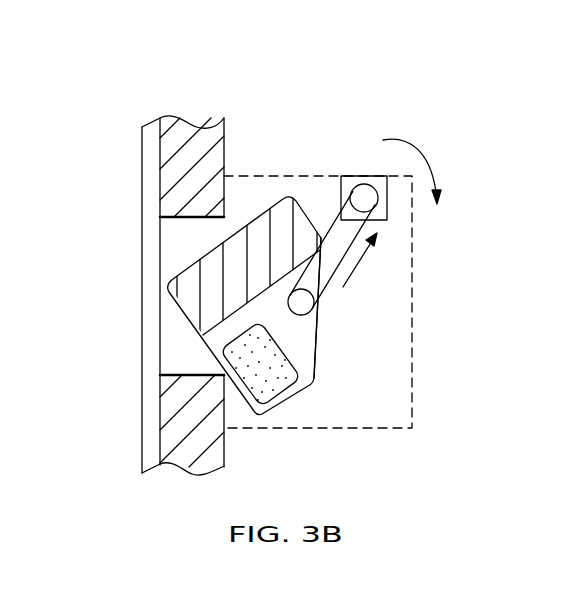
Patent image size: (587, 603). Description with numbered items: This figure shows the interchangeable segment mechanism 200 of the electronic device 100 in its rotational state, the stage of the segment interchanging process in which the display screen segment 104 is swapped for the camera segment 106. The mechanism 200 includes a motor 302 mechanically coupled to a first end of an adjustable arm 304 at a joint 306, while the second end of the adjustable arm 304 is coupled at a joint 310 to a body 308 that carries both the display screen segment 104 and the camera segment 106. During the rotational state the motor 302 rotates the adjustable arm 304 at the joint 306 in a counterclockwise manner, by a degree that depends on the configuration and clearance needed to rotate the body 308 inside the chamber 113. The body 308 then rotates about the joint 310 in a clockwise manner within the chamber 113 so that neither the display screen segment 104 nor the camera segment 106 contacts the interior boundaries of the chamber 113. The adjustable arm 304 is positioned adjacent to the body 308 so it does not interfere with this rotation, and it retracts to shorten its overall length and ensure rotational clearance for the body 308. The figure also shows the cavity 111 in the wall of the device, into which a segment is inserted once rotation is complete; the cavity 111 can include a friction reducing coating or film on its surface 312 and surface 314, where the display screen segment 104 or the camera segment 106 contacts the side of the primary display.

The electronic device 100 is at (110, 102).
The display screen segment 104 is at (282, 215).
The camera segment 106 is at (263, 388).
The cavity 111 is at (172, 320).
The chamber 113 is at (405, 414).
The interchangeable segment mechanism 200 is at (370, 162).
The motor 302 is at (355, 176).
The adjustable arm 304 is at (323, 277).
The joint 306 is at (367, 202).
The body 308 is at (316, 360).
The joint 310 is at (302, 303).
The surface 312 is at (172, 217).
The surface 314 is at (172, 375).